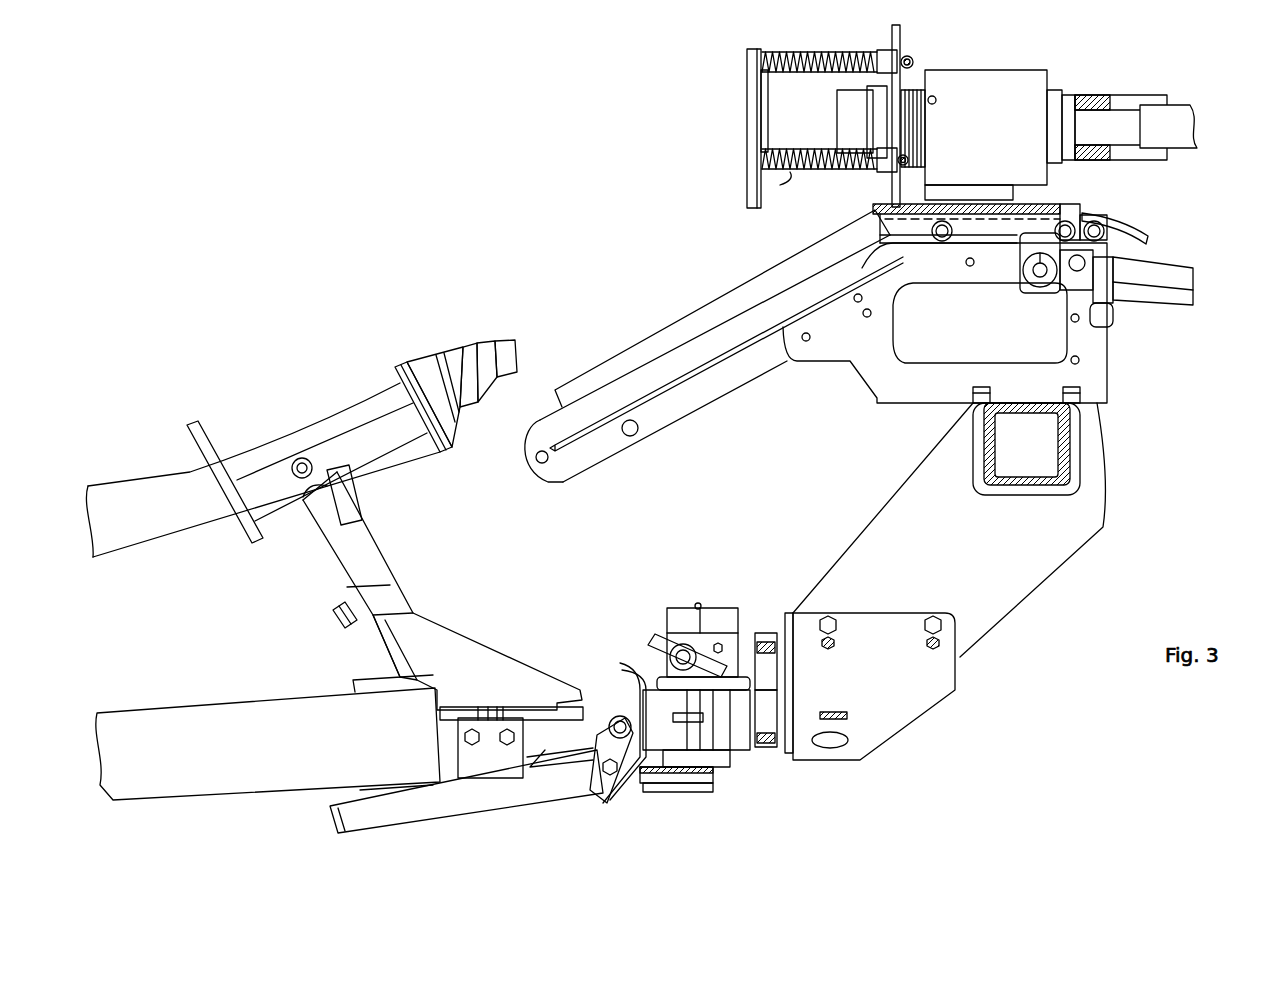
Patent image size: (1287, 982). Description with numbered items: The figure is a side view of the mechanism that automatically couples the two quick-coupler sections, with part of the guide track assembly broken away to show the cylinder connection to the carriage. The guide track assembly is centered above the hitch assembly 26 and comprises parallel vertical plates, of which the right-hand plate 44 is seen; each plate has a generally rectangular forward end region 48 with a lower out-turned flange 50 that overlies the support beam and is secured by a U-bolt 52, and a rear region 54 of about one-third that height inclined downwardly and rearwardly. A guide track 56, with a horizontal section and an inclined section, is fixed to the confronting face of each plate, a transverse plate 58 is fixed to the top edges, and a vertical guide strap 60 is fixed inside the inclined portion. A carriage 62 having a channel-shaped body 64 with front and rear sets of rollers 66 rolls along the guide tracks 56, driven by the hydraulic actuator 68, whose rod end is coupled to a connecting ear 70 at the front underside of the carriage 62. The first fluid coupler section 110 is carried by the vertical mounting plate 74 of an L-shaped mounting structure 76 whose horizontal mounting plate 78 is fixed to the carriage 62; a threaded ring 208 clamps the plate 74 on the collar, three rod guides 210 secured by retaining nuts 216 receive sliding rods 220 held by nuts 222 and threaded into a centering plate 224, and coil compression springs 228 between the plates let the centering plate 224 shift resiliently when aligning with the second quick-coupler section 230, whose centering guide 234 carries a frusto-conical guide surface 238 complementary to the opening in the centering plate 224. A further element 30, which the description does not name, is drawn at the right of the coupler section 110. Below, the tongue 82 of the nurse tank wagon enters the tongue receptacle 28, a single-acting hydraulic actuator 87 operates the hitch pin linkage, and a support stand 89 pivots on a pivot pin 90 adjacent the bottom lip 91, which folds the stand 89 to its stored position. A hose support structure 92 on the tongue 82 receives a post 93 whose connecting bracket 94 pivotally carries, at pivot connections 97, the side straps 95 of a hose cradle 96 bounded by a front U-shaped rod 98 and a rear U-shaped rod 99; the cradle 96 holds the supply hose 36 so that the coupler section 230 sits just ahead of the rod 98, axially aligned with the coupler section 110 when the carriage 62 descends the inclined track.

The hitch assembly 26 is at (925, 728).
The tongue receptacle 28 is at (678, 693).
The hydraulic cylinder rod 30 is at (1177, 143).
The supply hose 36 is at (263, 450).
The right-hand vertical plate 44 is at (1000, 358).
The forward end region 48 is at (1107, 383).
The lower out-turned flange 50 is at (933, 410).
The U-bolt 52 is at (1047, 495).
The rear region 54 is at (650, 430).
The guide track 56 is at (787, 361).
The transverse plate 58 is at (690, 343).
The vertical guide strap 60 is at (677, 320).
The carriage 62 is at (1077, 203).
The channel-shaped body 64 is at (993, 245).
The rollers 66 is at (943, 241).
The hydraulic actuator 68 is at (1183, 262).
The connecting ear 70 is at (1013, 277).
The vertical mounting plate 74 is at (897, 25).
The L-shaped mounting structure 76 is at (887, 190).
The horizontal mounting plate 78 is at (1012, 200).
The tongue 82 is at (241, 759).
The single-acting hydraulic actuator 87 is at (760, 630).
The support stand 89 is at (507, 803).
The pivot pin 90 is at (627, 720).
The bottom lip 91 is at (620, 787).
The hose support structure 92 is at (333, 623).
The post 93 is at (373, 560).
The connecting bracket 94 is at (345, 527).
The side straps 95 is at (360, 430).
The hose cradle 96 is at (256, 546).
The pivot connections 97 is at (302, 456).
The front U-shaped rod 98 is at (437, 443).
The rear U-shaped rod 99 is at (213, 503).
The first fluid coupler section 110 is at (1053, 65).
The threaded ring 208 is at (802, 53).
The rod guide 210 is at (853, 53).
The retaining nut 216 is at (908, 57).
The rod 220 is at (815, 72).
The nut 222 is at (913, 58).
The centering plate 224 is at (747, 67).
The coil compression spring 228 is at (795, 172).
The second quick-coupler section 230 is at (432, 351).
The centering guide 234 is at (474, 435).
The frusto-conical guide surface 238 is at (417, 370).